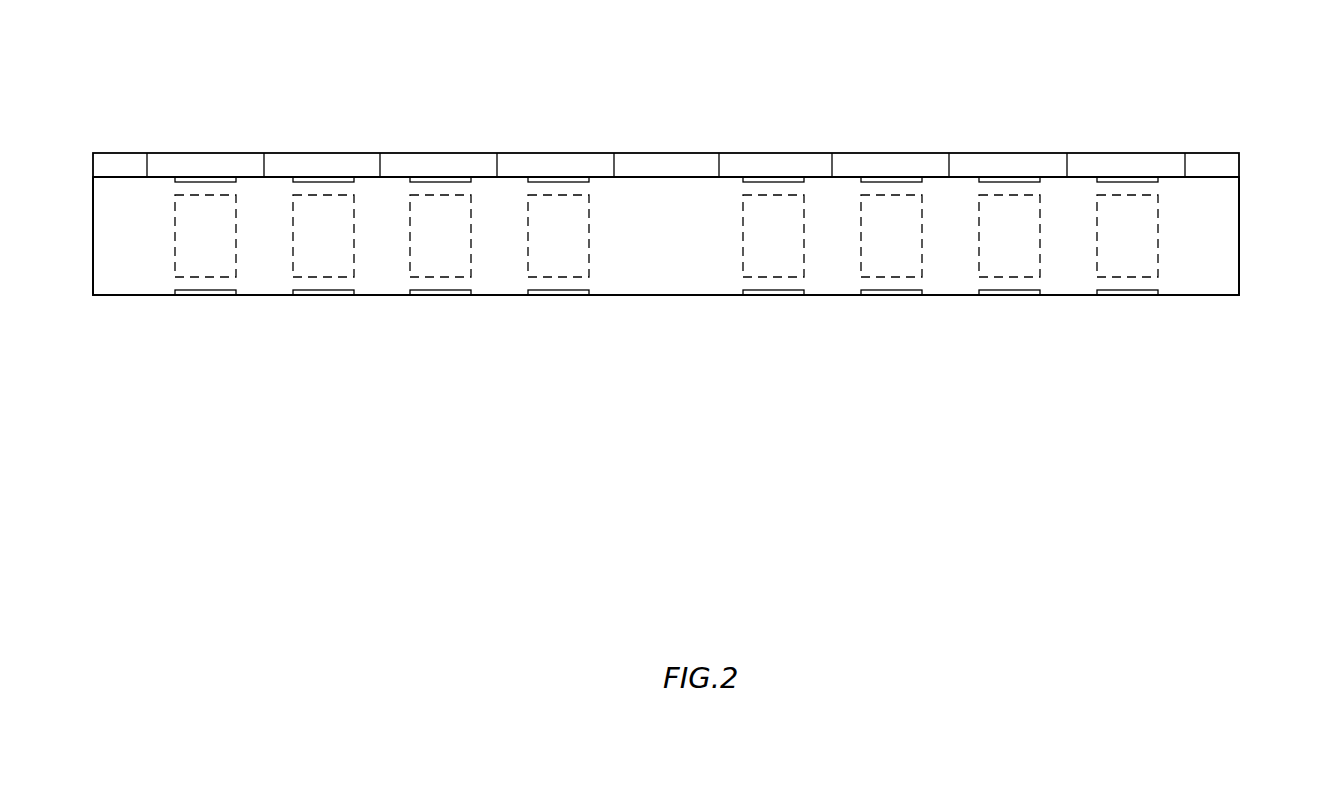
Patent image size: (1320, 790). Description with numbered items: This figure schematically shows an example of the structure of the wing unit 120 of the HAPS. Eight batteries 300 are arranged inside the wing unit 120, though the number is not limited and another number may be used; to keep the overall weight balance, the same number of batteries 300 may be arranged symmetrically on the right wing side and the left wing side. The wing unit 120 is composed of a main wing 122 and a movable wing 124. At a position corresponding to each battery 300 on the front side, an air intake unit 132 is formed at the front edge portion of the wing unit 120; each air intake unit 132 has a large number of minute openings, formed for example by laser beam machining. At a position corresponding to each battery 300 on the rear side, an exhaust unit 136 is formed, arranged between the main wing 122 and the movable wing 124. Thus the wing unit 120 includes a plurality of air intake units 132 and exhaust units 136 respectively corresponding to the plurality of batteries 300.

The wing unit 120 is at (150, 77).
The main wing 122 is at (1245, 179).
The movable wing 124 is at (1245, 153).
The exhaust unit 136 is at (206, 176).
The air intake unit 132 is at (206, 296).
The battery 300 is at (183, 251).